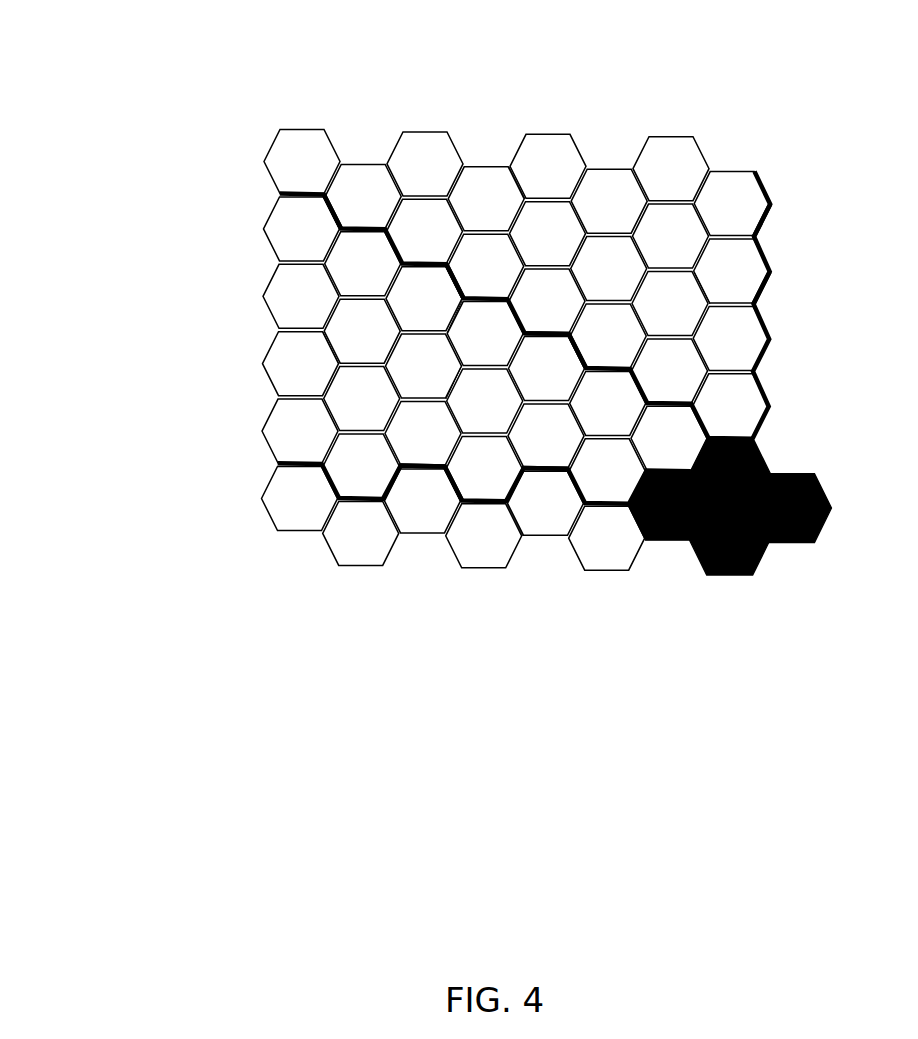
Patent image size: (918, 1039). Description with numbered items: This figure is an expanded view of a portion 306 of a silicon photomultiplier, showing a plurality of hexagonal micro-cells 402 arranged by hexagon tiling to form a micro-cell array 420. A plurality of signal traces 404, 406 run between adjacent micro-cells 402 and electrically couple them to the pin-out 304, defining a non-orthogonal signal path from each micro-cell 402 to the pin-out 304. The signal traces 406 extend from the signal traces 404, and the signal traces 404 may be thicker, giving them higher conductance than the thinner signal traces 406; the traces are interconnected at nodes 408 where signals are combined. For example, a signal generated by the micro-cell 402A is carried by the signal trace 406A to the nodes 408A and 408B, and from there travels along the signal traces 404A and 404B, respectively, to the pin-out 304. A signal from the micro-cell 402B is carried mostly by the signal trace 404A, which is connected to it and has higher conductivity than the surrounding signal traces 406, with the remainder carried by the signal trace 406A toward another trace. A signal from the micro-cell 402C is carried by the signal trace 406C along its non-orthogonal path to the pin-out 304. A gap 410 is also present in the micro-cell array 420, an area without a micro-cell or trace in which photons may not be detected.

The pin-out 304 is at (797, 540).
The portion of the SIPM 306 is at (85, 372).
The micro-cell 402 is at (420, 145).
The micro-cell 402A is at (450, 377).
The micro-cell 402B is at (392, 274).
The micro-cell 402C is at (700, 243).
The signal trace 404 is at (760, 175).
The signal trace 404A is at (278, 194).
The signal trace 404B is at (278, 465).
The signal trace 406 is at (508, 162).
The signal trace 406A is at (458, 318).
The signal trace 406C is at (705, 280).
The node 408 is at (340, 224).
The node 408A is at (468, 287).
The node 408B is at (442, 470).
The gap 410 is at (603, 128).
The micro-cell array 420 is at (771, 86).